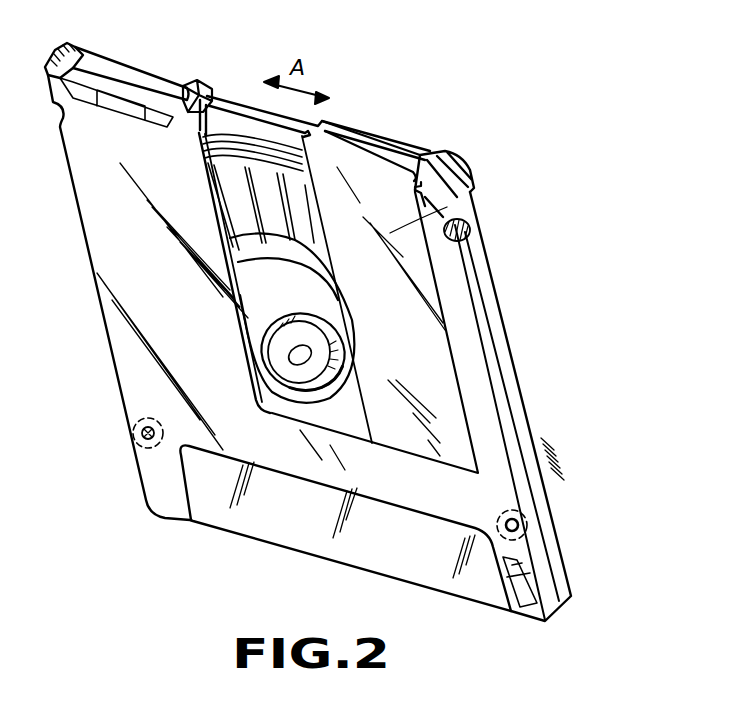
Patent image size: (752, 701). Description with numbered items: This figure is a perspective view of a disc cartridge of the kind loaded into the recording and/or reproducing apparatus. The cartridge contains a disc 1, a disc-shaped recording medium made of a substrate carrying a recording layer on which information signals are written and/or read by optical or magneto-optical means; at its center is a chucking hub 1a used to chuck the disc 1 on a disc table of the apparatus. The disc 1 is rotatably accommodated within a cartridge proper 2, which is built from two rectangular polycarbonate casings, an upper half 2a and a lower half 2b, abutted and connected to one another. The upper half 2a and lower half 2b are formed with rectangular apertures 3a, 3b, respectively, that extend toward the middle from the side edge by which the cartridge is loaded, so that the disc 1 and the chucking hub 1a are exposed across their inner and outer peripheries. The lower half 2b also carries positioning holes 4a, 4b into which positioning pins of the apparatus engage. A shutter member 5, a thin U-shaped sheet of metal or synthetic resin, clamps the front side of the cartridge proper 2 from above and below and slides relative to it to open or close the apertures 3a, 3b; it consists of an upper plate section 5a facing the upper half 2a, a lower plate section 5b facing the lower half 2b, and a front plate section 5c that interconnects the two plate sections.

The disc 1 is at (275, 217).
The chucking hub 1a is at (273, 346).
The cartridge proper 2 is at (510, 260).
The upper half 2a is at (508, 323).
The lower half 2b is at (522, 403).
The rectangular aperture 3a is at (243, 104).
The rectangular aperture 3b is at (213, 92).
The positioning hole 4a is at (140, 433).
The positioning hole 4b is at (520, 540).
The shutter member 5 is at (375, 126).
The upper plate section 5a is at (408, 150).
The lower plate section 5b is at (457, 210).
The front plate section 5c is at (447, 163).